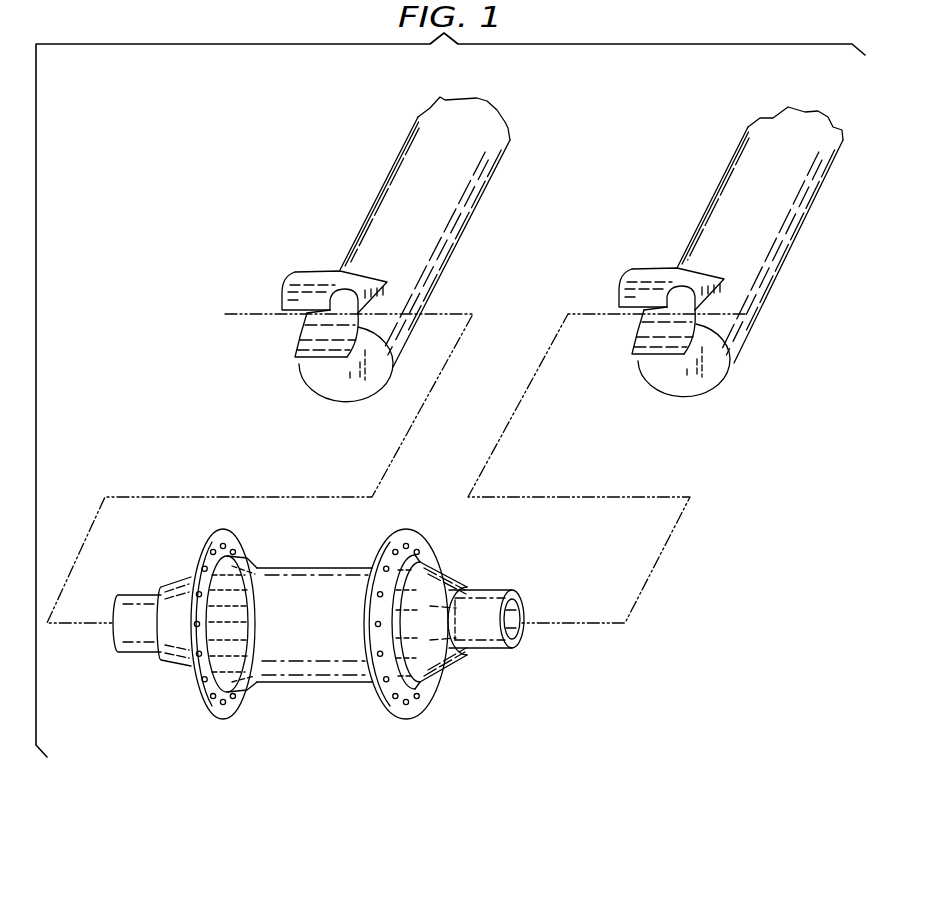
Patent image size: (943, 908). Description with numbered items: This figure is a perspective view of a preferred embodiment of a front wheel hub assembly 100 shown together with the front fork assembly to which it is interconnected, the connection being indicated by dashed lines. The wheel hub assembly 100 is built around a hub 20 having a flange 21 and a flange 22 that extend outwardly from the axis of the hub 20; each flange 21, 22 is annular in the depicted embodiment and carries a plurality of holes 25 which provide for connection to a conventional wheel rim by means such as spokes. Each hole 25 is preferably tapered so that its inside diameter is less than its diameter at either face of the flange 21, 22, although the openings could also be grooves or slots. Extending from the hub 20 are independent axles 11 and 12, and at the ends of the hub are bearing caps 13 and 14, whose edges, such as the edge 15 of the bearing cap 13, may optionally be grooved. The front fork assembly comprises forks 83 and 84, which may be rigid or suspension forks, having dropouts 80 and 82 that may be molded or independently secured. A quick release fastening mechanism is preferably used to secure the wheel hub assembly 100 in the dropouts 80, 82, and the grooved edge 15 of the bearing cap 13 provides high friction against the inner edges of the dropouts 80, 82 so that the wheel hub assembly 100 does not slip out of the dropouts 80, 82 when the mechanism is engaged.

The wheel hub assembly 100 is at (318, 626).
The independent axle 11 is at (498, 594).
The independent axle 12 is at (140, 598).
The bearing cap 13 is at (446, 570).
The bearing cap 14 is at (178, 578).
The grooved edge 15 is at (464, 660).
The hub 20 is at (313, 568).
The flange 21 is at (405, 531).
The flange 22 is at (228, 536).
The holes 25 is at (205, 698).
The dropout 80 is at (626, 282).
The dropout 82 is at (290, 285).
The fork 83 is at (722, 192).
The fork 84 is at (387, 190).